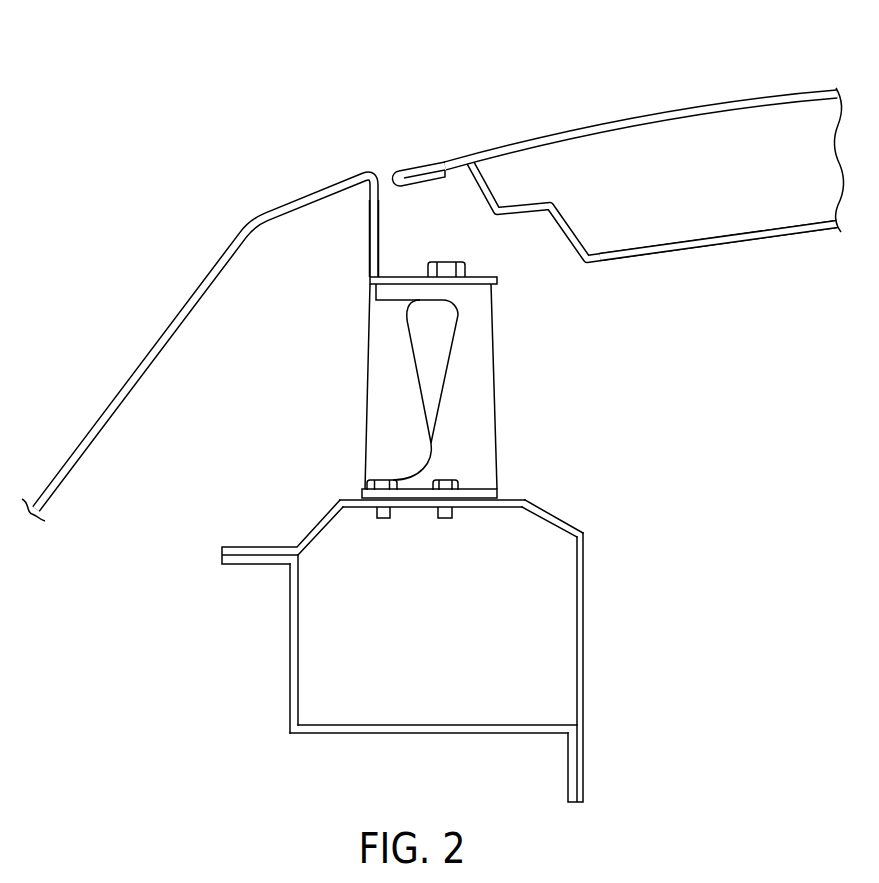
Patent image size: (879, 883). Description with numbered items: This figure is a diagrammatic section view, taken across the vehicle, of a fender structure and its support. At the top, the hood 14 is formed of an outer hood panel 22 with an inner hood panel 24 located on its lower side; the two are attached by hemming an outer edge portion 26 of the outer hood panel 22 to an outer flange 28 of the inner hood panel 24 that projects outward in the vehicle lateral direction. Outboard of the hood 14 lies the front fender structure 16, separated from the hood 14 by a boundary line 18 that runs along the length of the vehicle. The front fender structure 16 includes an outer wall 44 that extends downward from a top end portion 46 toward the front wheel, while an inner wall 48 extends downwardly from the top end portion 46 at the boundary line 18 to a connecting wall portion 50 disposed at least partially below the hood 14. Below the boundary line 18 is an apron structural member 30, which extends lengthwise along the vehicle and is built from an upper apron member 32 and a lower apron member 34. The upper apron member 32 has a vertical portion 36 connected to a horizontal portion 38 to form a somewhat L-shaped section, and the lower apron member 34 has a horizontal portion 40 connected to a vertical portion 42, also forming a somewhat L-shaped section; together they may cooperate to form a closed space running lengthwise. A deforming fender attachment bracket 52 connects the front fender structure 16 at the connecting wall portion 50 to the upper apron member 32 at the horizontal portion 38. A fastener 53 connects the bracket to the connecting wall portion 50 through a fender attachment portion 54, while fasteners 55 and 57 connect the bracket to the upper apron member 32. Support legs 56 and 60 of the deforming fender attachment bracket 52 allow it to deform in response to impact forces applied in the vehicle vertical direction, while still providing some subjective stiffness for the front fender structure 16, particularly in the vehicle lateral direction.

The hood 14 is at (617, 154).
The front fender structure 16 is at (200, 329).
The boundary line 18 is at (355, 117).
The outer hood panel 22 is at (709, 103).
The inner hood panel 24 is at (720, 247).
The outer edge portion 26 is at (428, 170).
The outer flange 28 is at (480, 177).
The apron structural member 30 is at (385, 625).
The upper apron member 32 is at (432, 624).
The lower apron member 34 is at (377, 680).
The vertical portion 36 is at (585, 627).
The horizontal portion 38 is at (478, 508).
The horizontal portion 40 is at (436, 725).
The vertical portion 42 is at (290, 622).
The outer wall 44 is at (137, 350).
The top end portion 46 is at (342, 175).
The inner wall 48 is at (368, 231).
The connecting wall portion 50 is at (498, 280).
The deforming fender attachment bracket 52 is at (369, 391).
The fastener 53 is at (447, 262).
The fender attachment portion 54 is at (428, 310).
The fastener 55 is at (380, 479).
The support leg 56 is at (550, 386).
The fastener 57 is at (450, 479).
The support leg 60 is at (426, 362).